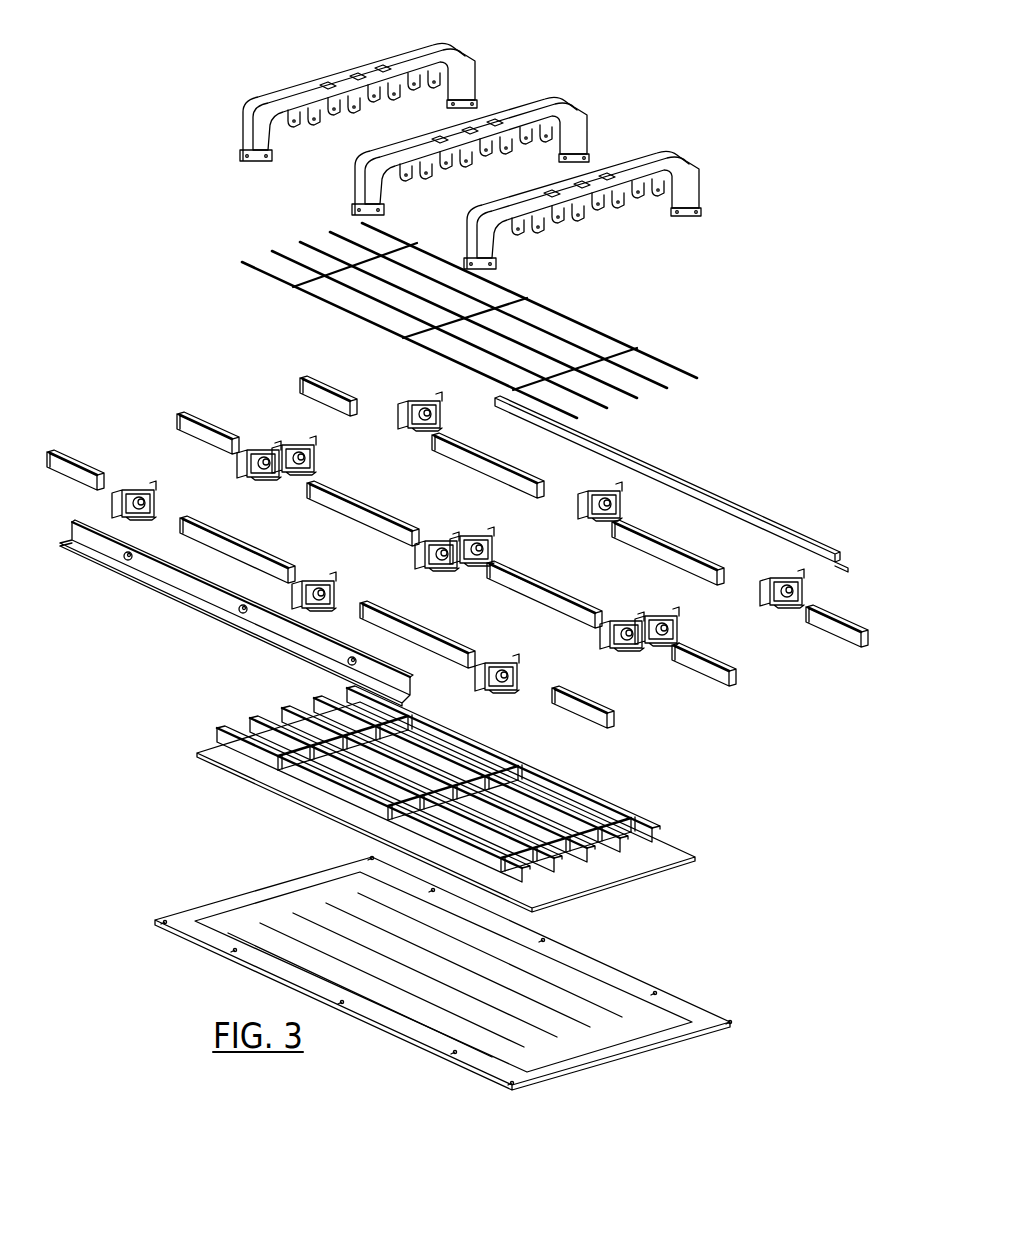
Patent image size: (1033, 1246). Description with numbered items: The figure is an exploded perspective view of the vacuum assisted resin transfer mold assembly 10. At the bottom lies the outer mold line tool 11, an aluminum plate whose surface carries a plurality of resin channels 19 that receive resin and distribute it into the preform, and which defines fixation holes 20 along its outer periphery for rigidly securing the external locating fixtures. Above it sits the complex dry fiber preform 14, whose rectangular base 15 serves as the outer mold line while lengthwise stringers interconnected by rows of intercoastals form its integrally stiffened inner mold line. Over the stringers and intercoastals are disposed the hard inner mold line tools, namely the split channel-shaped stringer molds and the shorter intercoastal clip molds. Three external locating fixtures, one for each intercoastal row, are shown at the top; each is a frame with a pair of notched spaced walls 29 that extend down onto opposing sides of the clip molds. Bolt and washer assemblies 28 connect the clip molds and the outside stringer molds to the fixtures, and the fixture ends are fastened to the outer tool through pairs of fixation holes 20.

The vacuum assisted resin transfer mold assembly 10 is at (135, 283).
The outer mold line tool 11 is at (612, 1063).
The dry fiber preform 14 is at (650, 875).
The rectangular base 15 is at (698, 855).
The resin channels 19 is at (433, 1005).
The fixation holes 20 is at (233, 950).
The bolt and washer assembly 28 is at (242, 613).
The spaced walls 29 is at (412, 140).